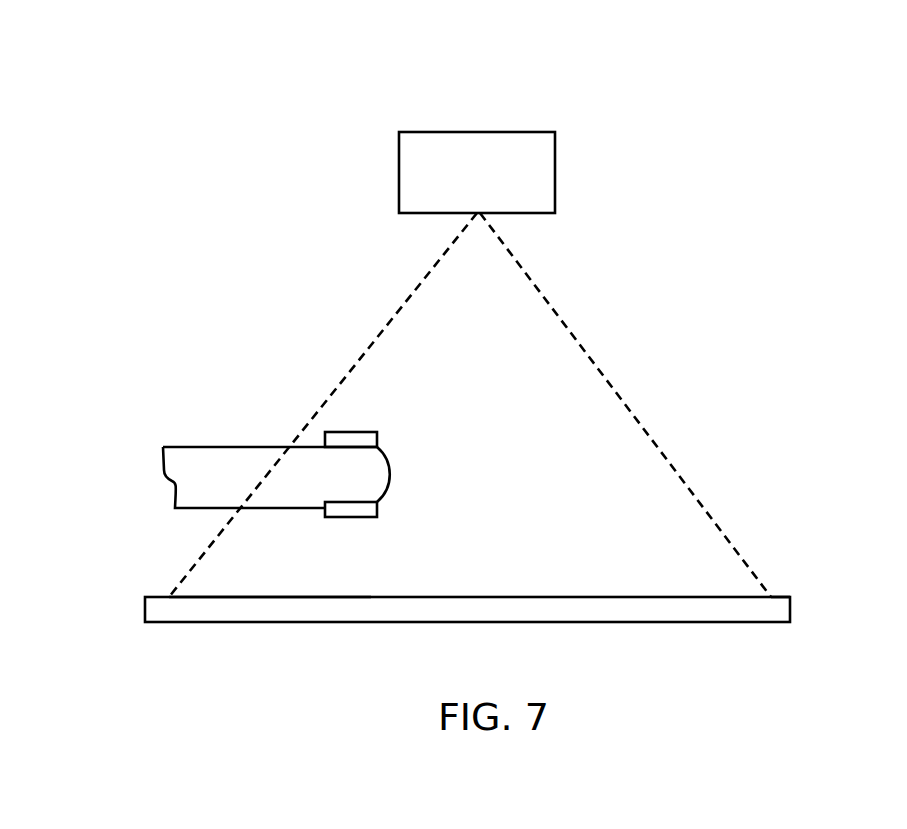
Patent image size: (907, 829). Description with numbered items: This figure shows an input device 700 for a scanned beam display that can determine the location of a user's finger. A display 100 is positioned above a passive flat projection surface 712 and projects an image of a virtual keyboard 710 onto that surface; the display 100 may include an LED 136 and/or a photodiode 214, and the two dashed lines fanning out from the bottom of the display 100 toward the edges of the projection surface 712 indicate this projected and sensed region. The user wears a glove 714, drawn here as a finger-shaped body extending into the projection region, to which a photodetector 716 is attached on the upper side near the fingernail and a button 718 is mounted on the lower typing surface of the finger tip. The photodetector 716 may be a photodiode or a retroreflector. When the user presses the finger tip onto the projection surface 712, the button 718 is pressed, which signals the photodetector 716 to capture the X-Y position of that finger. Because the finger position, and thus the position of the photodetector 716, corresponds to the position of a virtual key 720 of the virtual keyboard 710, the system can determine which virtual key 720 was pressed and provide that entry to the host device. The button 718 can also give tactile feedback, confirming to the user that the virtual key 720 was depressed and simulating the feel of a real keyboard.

The system 700 is at (781, 99).
The display 100 is at (556, 145).
The LED 136 is at (432, 214).
The photodiode 214 is at (521, 214).
The glove 714 is at (246, 447).
The photodetector 716 is at (370, 432).
The button 718 is at (372, 517).
The virtual keyboard 710 is at (608, 597).
The projection surface 712 is at (784, 597).
The virtual key 720 is at (371, 597).